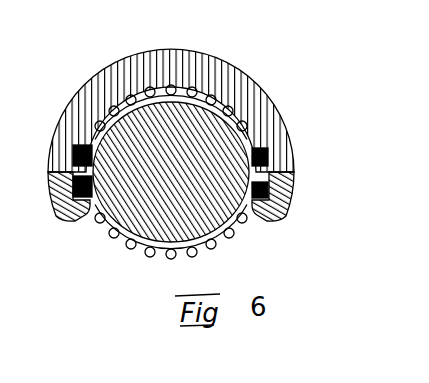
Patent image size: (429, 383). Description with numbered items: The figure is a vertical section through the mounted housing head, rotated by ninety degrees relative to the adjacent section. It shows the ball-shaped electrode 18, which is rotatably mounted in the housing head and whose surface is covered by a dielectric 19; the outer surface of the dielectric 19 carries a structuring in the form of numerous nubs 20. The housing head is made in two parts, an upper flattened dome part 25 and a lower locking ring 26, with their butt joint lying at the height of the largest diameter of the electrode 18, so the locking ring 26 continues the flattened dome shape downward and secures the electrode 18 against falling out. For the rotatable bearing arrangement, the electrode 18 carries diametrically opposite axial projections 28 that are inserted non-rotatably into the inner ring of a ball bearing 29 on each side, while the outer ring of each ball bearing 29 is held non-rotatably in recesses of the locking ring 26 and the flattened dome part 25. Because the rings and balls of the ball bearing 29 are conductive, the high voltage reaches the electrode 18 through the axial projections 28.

The electrode 18 is at (110, 228).
The dielectric 19 is at (216, 242).
The nubs 20 is at (158, 257).
The flattened dome part 25 is at (225, 82).
The locking ring 26 is at (290, 206).
The axial projections 28 is at (270, 172).
The ball bearing 29 is at (268, 148).